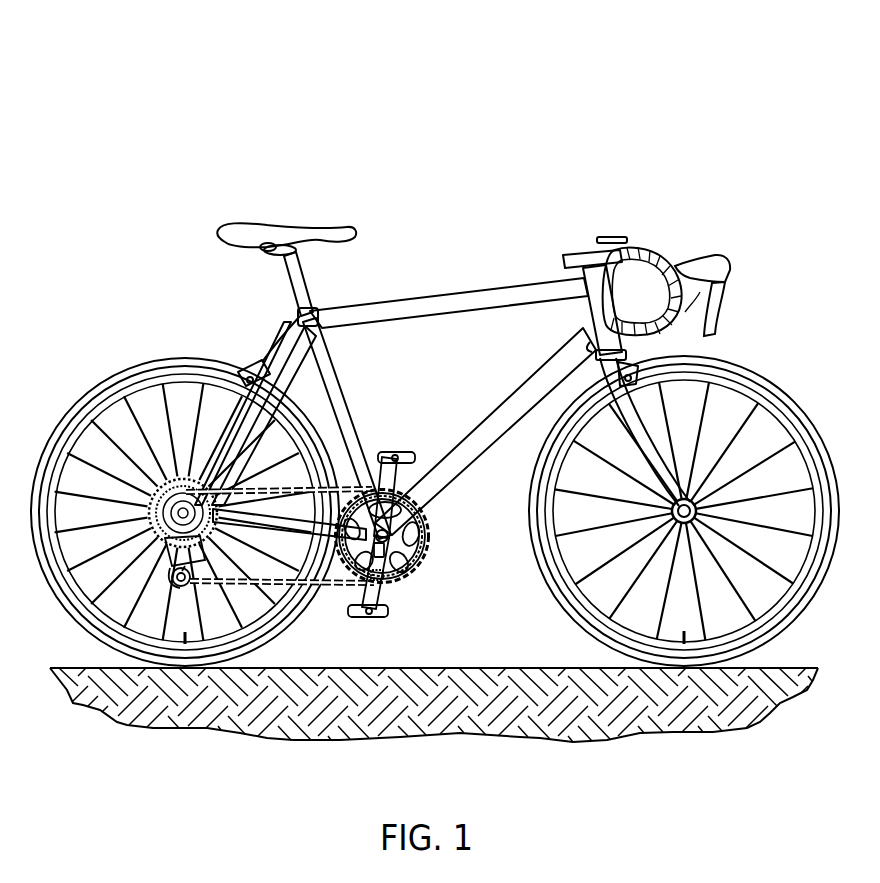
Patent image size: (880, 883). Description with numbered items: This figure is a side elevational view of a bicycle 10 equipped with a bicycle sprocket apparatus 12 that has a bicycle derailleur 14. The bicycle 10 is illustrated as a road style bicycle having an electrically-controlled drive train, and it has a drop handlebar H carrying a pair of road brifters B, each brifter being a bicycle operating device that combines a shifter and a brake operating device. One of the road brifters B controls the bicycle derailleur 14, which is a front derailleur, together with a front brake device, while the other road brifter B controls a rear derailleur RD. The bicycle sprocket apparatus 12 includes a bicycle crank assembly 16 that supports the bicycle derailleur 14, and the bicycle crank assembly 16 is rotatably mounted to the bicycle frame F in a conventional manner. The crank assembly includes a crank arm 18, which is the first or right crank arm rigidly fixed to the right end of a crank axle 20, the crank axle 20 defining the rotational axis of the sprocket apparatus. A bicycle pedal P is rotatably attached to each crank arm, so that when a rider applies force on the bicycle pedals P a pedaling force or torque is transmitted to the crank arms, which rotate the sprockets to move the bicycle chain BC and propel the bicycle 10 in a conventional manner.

The bicycle 10 is at (435, 346).
The bicycle sprocket apparatus 12 is at (384, 533).
The bicycle derailleur 14 is at (405, 589).
The bicycle crank assembly 16 is at (330, 557).
The crank arm 18 is at (391, 596).
The crank axle 20 is at (411, 462).
The drop handlebar H is at (654, 244).
The road brifter B is at (748, 250).
The bicycle pedal P is at (383, 451).
The bicycle frame F is at (293, 490).
The rear derailleur RD is at (152, 544).
The bicycle chain BC is at (345, 586).